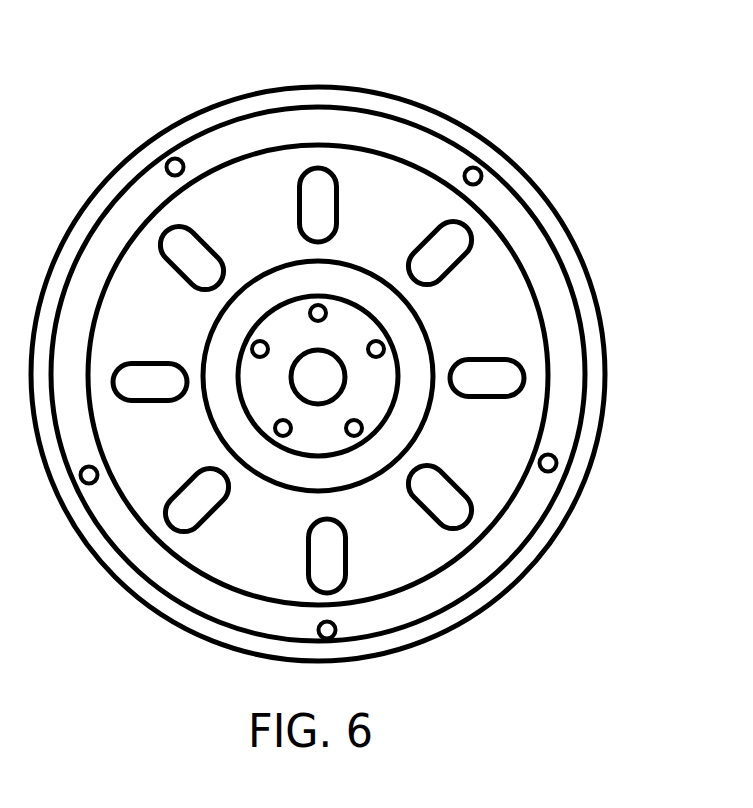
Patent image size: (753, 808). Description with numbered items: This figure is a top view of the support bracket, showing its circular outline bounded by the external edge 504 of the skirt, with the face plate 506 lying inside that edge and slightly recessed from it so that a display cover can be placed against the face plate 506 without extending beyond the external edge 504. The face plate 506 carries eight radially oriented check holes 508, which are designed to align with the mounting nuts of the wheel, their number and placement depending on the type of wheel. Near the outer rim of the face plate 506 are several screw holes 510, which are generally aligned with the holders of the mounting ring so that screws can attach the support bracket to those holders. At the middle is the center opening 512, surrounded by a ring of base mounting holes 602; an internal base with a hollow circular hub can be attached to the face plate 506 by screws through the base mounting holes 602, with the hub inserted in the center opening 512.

The external edge 504 is at (527, 195).
The face plate 506 is at (496, 305).
The check holes 508 is at (347, 567).
The screw holes 510 is at (178, 157).
The center opening 512 is at (290, 383).
The base mounting holes 602 is at (330, 311).